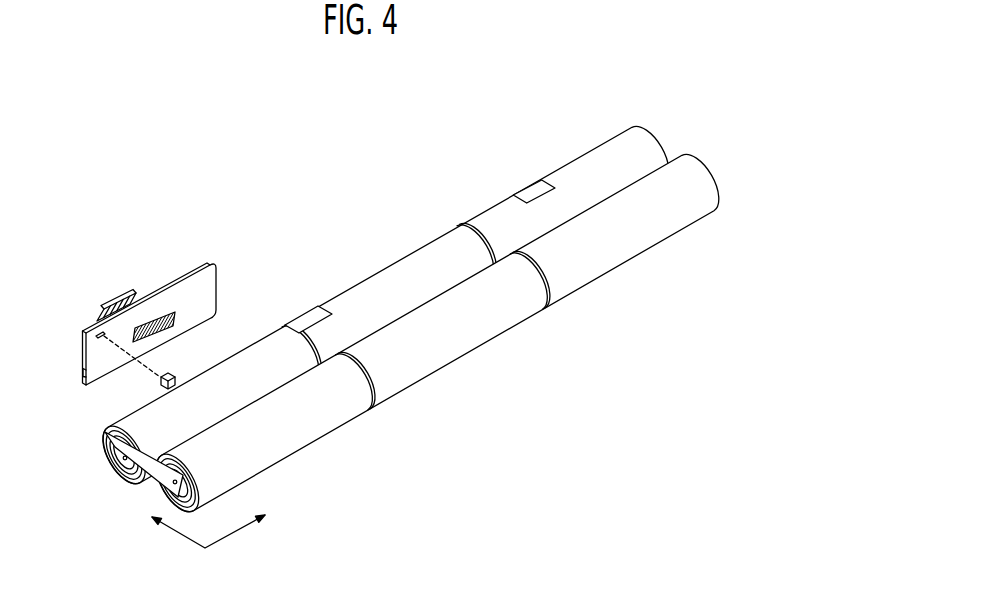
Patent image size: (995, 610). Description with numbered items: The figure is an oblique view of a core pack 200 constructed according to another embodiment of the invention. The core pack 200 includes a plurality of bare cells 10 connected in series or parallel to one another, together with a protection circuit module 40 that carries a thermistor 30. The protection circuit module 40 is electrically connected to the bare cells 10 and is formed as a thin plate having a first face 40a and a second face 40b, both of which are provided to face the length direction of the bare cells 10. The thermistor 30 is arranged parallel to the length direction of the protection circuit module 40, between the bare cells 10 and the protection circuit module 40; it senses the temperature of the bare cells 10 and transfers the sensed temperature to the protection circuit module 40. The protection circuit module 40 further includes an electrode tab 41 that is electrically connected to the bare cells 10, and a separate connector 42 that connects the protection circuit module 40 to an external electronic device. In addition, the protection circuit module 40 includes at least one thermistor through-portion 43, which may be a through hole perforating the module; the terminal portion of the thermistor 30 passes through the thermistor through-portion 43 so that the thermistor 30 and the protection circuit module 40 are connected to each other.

The core pack 200 is at (427, 102).
The bare cells 10 is at (383, 266).
The protection circuit module 40 is at (182, 277).
The first face 40a is at (220, 294).
The second face 40b is at (193, 271).
The connector 42 is at (120, 297).
The thermistor 30 is at (152, 319).
The thermistor through-portion 43 is at (136, 345).
The electrode tab 41 is at (105, 432).